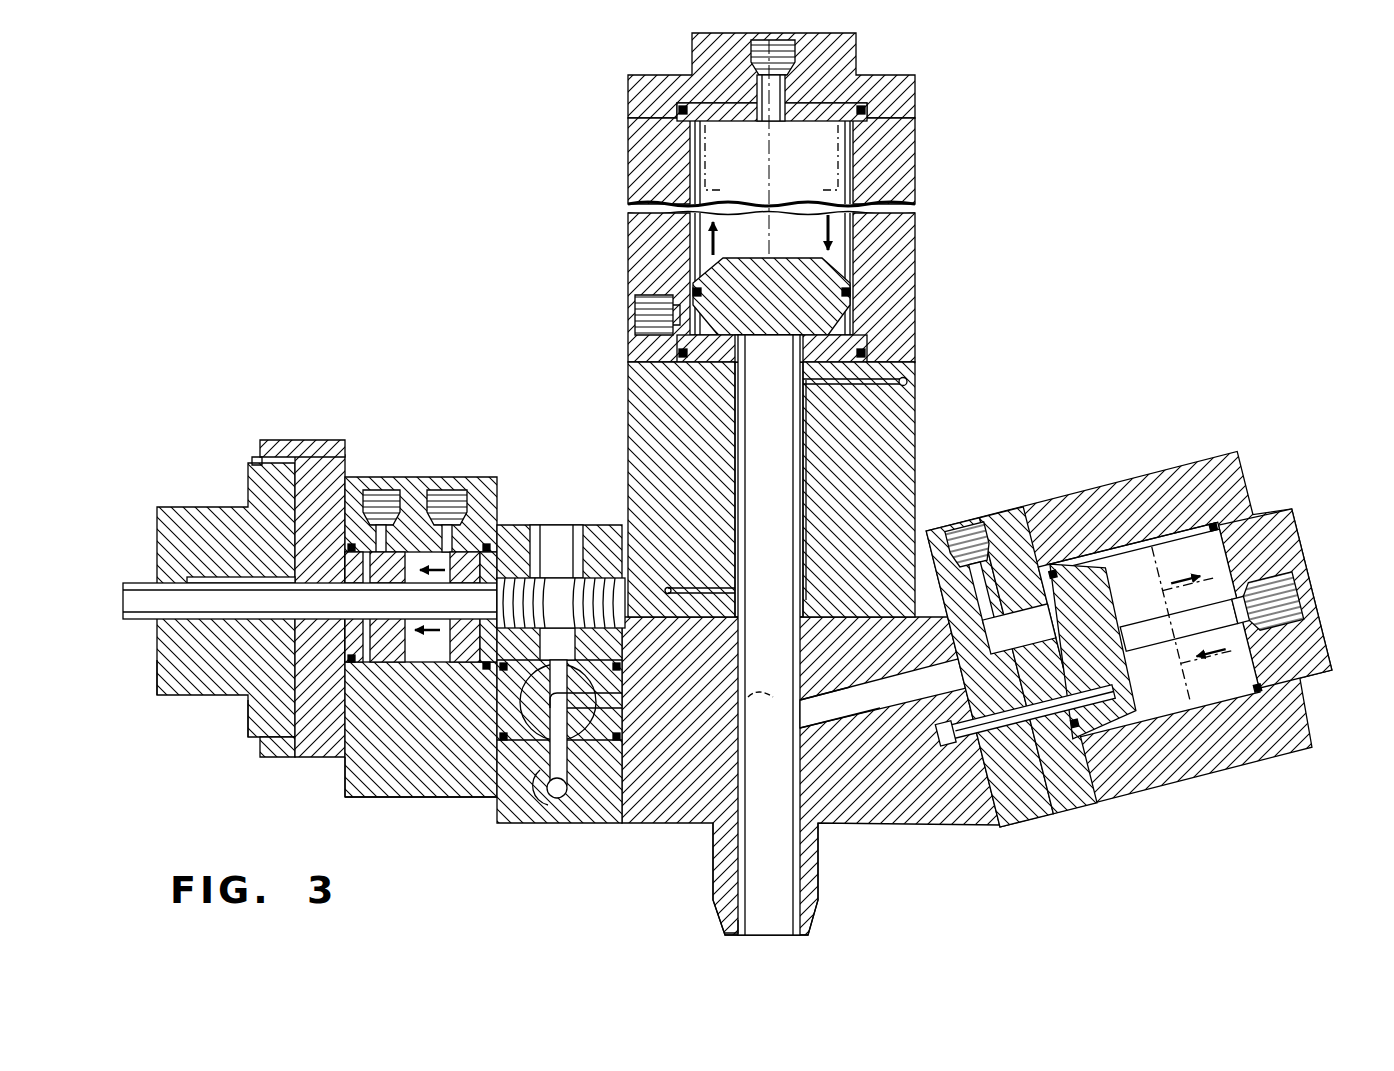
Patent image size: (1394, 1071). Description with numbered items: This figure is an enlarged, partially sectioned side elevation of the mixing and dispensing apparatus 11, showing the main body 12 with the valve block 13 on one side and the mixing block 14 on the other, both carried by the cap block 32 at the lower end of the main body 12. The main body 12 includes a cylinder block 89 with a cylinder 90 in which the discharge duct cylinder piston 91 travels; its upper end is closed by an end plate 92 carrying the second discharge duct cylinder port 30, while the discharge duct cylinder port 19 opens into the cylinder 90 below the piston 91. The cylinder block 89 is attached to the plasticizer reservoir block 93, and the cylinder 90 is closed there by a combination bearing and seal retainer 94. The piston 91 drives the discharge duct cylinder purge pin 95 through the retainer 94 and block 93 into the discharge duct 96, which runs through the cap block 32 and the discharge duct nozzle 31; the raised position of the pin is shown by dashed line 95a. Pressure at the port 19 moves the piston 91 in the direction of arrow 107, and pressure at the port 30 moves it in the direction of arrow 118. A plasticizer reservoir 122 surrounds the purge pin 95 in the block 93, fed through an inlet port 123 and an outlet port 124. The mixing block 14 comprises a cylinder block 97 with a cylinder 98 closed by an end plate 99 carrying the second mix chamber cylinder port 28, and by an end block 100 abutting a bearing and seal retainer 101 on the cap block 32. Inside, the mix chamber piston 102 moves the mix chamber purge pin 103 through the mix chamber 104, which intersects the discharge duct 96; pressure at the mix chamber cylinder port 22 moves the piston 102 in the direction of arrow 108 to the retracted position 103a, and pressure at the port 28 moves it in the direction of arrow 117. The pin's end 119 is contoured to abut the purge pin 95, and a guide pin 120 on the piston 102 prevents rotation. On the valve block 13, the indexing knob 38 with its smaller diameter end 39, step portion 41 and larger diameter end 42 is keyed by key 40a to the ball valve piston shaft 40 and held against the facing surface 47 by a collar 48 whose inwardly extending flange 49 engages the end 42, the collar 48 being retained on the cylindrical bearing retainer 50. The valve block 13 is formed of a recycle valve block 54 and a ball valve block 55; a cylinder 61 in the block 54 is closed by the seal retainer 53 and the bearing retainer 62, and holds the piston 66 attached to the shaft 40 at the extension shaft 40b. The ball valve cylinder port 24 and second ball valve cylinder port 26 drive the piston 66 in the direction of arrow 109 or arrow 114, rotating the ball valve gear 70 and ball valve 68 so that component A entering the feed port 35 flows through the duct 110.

The mixing and dispensing apparatus 11 is at (1105, 328).
The main body 12 is at (779, 325).
The valve block 13 is at (367, 635).
The mixing block 14 is at (1133, 660).
The discharge duct cylinder port 19 is at (635, 318).
The mix chamber cylinder port 22 is at (1000, 585).
The ball valve cylinder port 24 is at (452, 505).
The second ball valve cylinder port 26 is at (382, 505).
The second mix chamber cylinder port 28 is at (1266, 603).
The second discharge duct cylinder port 30 is at (793, 63).
The discharge duct nozzle 31 is at (815, 905).
The cap block 32 is at (912, 825).
The feed port 35 is at (566, 800).
The indexing knob 38 is at (165, 652).
The smaller diameter end 39 is at (175, 712).
The ball valve piston shaft 40 is at (135, 606).
The key 40a is at (210, 578).
The extension shaft 40b is at (448, 640).
The intermediate diameter step portion 41 is at (250, 722).
The larger diameter end 42 is at (275, 757).
The facing surface 47 is at (345, 790).
The collar 48 is at (300, 440).
The inwardly extending flange 49 is at (256, 460).
The cylindrical bearing retainer 50 is at (330, 442).
The seal retainer 53 is at (347, 565).
The recycle valve block 54 is at (385, 800).
The ball valve block 55 is at (505, 830).
The cylinder 61 is at (432, 645).
The bearing retainer 62 is at (472, 545).
The piston 66 is at (352, 630).
The ball valve 68 is at (603, 690).
The ball valve gear 70 is at (626, 594).
The cylinder block 89 is at (915, 200).
The cylinder 90 is at (853, 252).
The discharge duct cylinder piston 91 is at (762, 262).
The end plate 92 is at (915, 80).
The plasticizer reservoir block 93 is at (915, 425).
The combination bearing and seal retainer 94 is at (685, 354).
The discharge duct cylinder purge pin 95 is at (790, 518).
The dashed line 95a is at (746, 697).
The discharge duct 96 is at (725, 933).
The cylinder block 97 is at (1138, 634).
The cylinder 98 is at (1179, 625).
The end plate 99 is at (1274, 597).
The end block 100 is at (989, 672).
The bearing and seal retainer 101 is at (1038, 660).
The mix chamber piston 102 is at (1086, 644).
The mix chamber purge pin 103 is at (935, 676).
The dashed line 103a is at (870, 690).
The mix chamber 104 is at (870, 714).
The arrow 107 is at (710, 236).
The arrow 108 is at (1185, 579).
The arrow 109 is at (418, 575).
The duct 110 is at (598, 710).
The arrow 114 is at (410, 645).
The arrow 117 is at (1211, 652).
The arrow 118 is at (826, 222).
The end 119 is at (780, 740).
The guide pin 120 is at (1025, 713).
The reservoir 122 is at (793, 462).
The inlet port 123 is at (907, 381).
The outlet port 124 is at (672, 586).